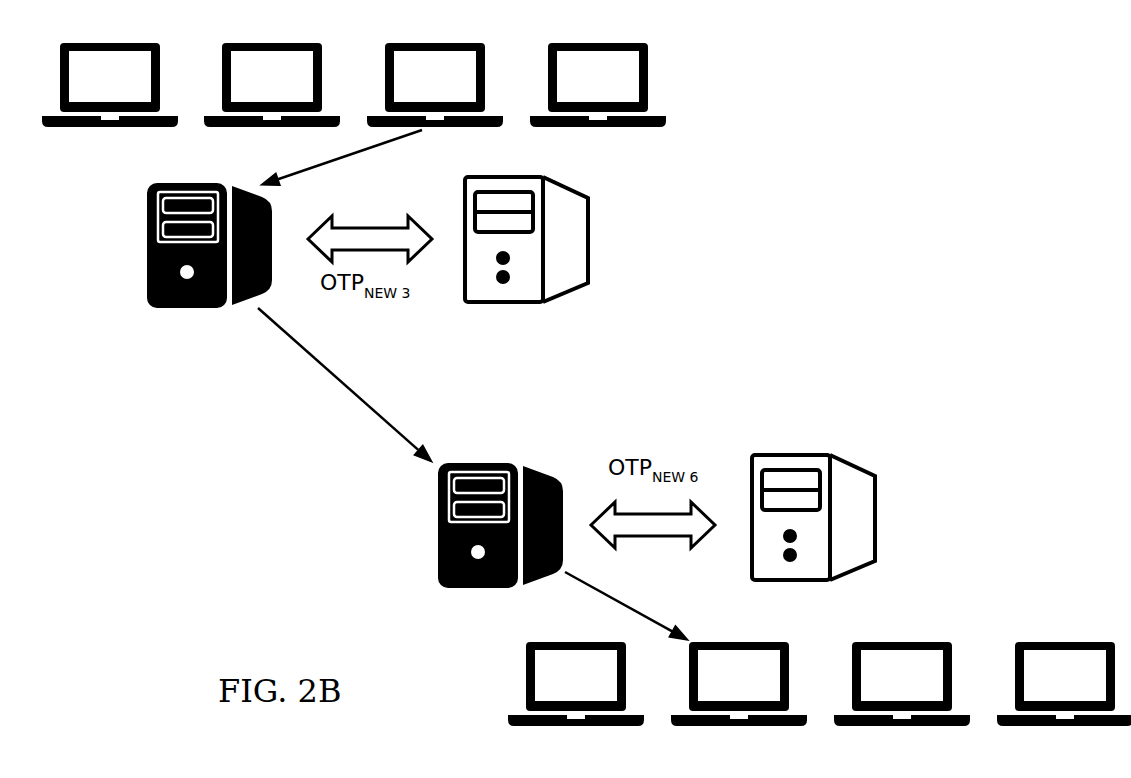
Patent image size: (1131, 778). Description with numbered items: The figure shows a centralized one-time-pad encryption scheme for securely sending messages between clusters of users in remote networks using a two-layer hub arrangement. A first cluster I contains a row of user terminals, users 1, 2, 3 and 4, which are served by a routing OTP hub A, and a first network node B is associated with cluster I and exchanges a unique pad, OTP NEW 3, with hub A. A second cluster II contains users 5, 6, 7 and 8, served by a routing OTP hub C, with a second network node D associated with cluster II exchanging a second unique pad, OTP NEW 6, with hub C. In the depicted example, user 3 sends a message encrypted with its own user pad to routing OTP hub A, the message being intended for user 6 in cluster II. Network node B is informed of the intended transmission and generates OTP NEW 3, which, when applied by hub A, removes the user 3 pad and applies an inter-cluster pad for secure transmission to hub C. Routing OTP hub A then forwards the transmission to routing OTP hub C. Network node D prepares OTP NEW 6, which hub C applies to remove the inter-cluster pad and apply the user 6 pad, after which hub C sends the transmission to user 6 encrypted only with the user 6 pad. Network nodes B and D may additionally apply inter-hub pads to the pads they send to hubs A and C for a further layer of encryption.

The user 1 is at (110, 85).
The user 2 is at (272, 85).
The user 3 is at (435, 85).
The user 4 is at (598, 85).
The user 5 is at (576, 684).
The user 6 is at (739, 684).
The user 7 is at (902, 684).
The user 8 is at (1064, 684).
The routing OTP hub A is at (209, 273).
The first network node B is at (526, 270).
The routing OTP hub C is at (500, 503).
The second network node D is at (813, 499).
The first cluster I is at (106, 164).
The second cluster II is at (889, 599).